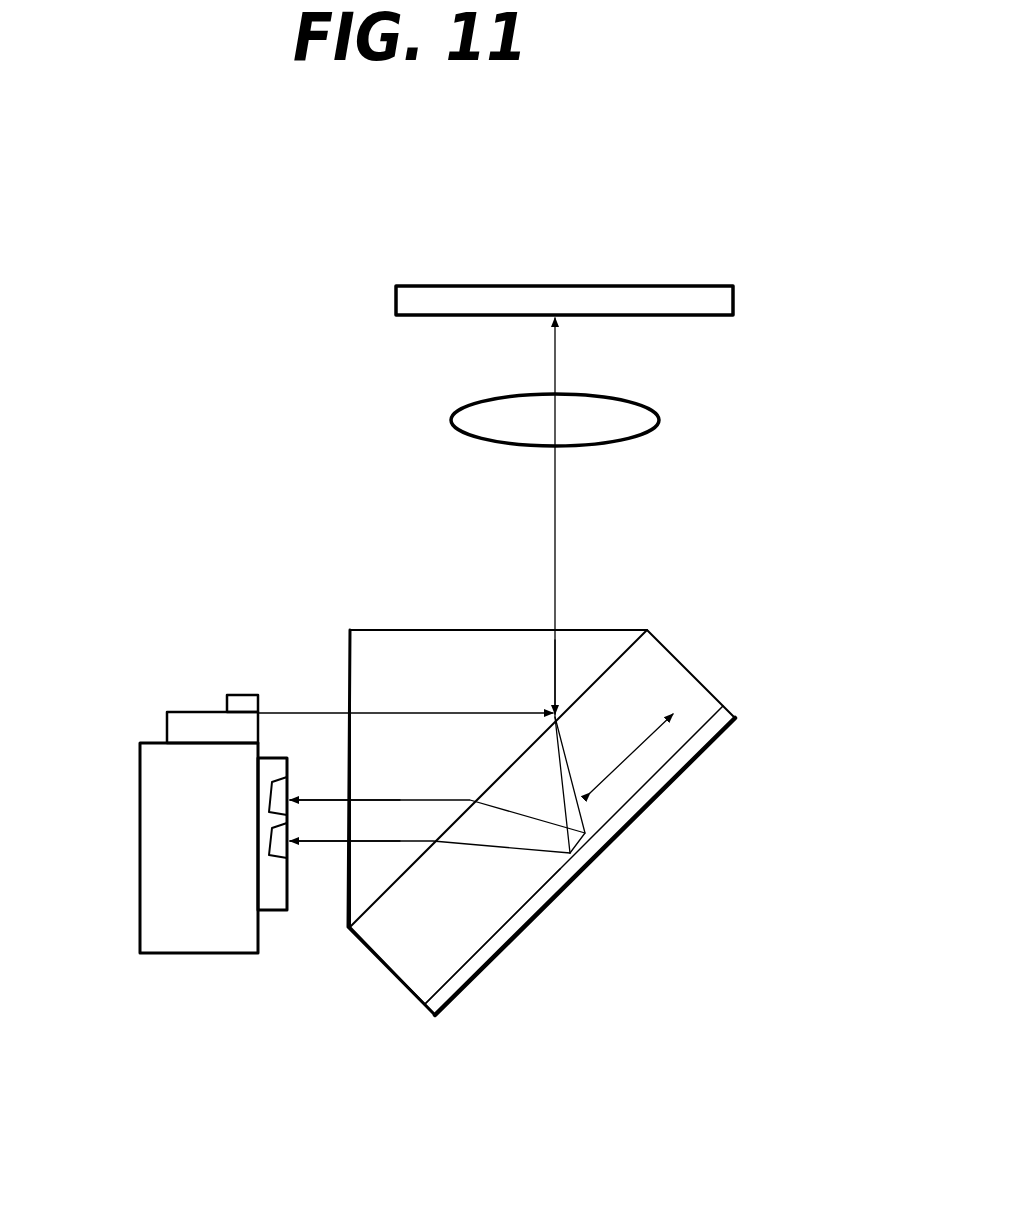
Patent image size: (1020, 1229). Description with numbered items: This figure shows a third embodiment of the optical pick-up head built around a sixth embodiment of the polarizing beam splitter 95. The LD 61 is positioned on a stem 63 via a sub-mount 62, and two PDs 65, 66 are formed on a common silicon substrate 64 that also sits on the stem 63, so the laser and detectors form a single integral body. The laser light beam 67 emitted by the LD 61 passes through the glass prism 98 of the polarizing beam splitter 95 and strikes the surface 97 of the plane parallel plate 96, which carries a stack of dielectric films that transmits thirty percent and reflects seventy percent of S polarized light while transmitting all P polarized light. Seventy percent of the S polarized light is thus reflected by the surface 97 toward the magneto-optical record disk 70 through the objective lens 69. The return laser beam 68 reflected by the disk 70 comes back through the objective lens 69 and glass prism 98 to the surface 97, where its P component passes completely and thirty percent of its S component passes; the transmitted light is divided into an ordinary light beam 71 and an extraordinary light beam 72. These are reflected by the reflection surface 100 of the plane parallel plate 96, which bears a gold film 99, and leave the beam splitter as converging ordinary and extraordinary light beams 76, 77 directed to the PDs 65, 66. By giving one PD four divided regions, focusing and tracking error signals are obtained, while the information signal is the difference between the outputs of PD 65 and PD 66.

The LD 61 is at (235, 700).
The sub-mount 62 is at (183, 723).
The stem 63 is at (140, 896).
The common silicon substrate 64 is at (275, 905).
The PD 65 is at (268, 842).
The PD 66 is at (282, 790).
The laser light beam 67 is at (298, 711).
The return laser beam 68 is at (556, 497).
The objective lens 69 is at (659, 420).
The magneto-optical record disk 70 is at (735, 300).
The ordinary light beam 71 is at (583, 810).
The extraordinary light beam 72 is at (557, 783).
The ordinary light beam 76 is at (380, 840).
The extraordinary light beam 77 is at (403, 800).
The polarizing beam splitter 95 is at (684, 636).
The plane parallel plate 96 is at (683, 683).
The surface 97 is at (611, 662).
The glass prism 98 is at (575, 647).
The gold film 99 is at (532, 903).
The reflection surface 100 is at (476, 951).